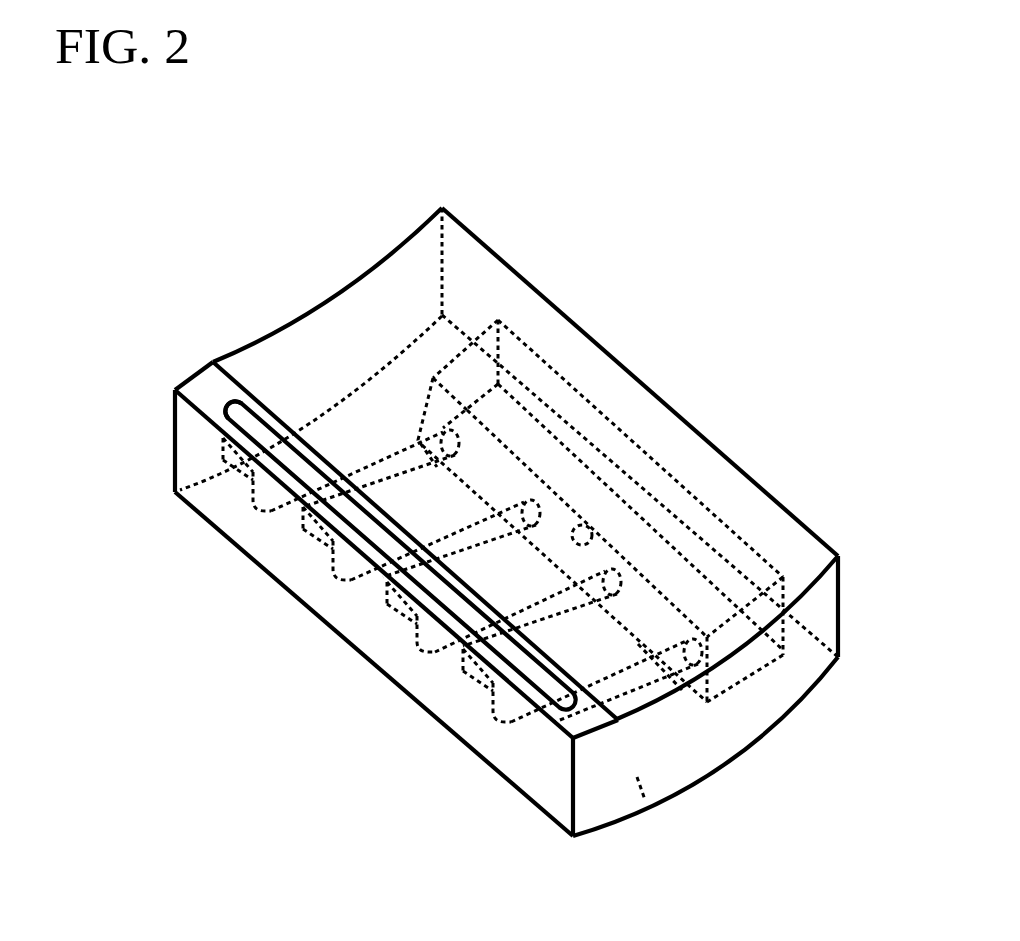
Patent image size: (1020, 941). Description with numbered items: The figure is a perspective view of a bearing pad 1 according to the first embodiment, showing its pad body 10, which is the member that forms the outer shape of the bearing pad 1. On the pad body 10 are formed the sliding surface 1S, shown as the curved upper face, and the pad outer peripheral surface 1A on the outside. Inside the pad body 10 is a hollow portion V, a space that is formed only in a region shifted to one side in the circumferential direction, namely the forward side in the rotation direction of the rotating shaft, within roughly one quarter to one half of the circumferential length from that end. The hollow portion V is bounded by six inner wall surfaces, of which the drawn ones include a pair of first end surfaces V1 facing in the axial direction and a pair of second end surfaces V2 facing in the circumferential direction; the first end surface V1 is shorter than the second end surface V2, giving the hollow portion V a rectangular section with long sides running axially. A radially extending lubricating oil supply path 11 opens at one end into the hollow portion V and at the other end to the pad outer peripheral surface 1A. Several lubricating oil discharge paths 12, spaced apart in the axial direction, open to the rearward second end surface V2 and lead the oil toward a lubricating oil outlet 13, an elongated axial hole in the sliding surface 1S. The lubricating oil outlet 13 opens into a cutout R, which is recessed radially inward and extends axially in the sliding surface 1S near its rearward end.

The bearing pad 1 is at (230, 184).
The pad body 10 is at (350, 244).
The sliding surface 1S is at (320, 345).
The pad outer peripheral surface 1A is at (648, 808).
The cutout R is at (201, 394).
The lubricating oil outlet 13 is at (258, 442).
The lubricating oil discharge path 12 is at (268, 514).
The lubricating oil supply path 11 is at (583, 532).
The hollow portion V is at (612, 426).
The first end surface V1 is at (470, 375).
The second end surface V2 is at (695, 507).